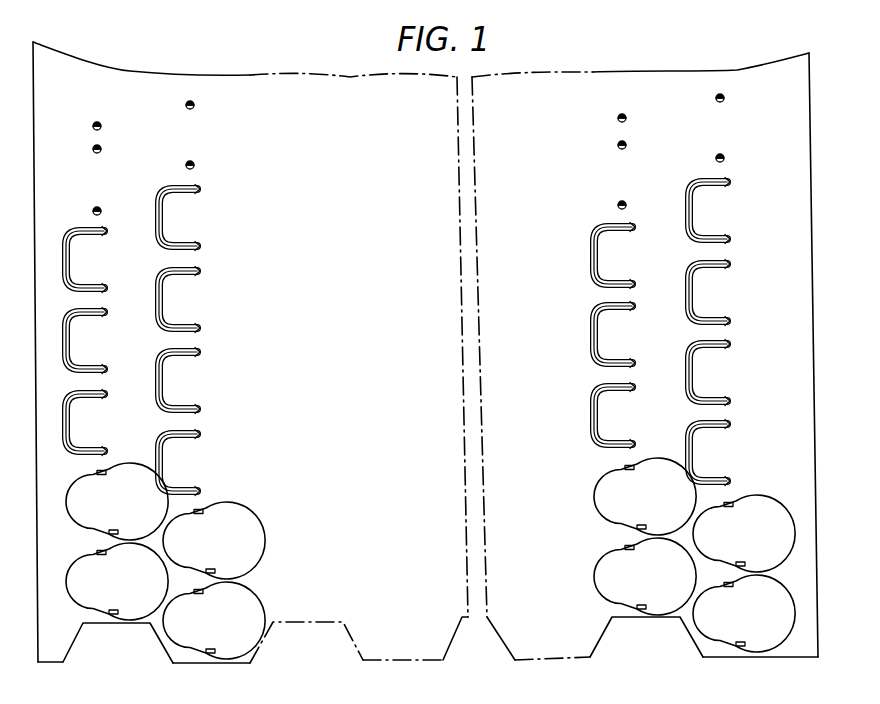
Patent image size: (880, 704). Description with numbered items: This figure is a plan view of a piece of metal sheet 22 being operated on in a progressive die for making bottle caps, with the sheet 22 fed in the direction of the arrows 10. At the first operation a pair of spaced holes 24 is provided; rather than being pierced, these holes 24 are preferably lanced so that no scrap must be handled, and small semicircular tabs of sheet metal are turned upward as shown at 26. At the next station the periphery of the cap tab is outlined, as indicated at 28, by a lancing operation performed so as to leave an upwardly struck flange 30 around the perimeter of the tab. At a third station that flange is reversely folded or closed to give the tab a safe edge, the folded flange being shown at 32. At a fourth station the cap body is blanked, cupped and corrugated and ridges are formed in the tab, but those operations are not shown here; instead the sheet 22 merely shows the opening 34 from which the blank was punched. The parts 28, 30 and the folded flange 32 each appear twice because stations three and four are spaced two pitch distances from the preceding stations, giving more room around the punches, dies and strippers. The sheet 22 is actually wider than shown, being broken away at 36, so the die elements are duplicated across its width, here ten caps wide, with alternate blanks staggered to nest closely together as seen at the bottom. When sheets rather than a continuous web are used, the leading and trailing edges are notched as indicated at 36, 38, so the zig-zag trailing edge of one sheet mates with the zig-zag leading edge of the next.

The feed direction arrows 10 is at (418, 382).
The metal sheet 22 is at (193, 52).
The spaced holes 24 is at (191, 109).
The semicircular tabs 26 is at (190, 102).
The tab periphery outline 28 is at (168, 195).
The upwardly struck flange 30 is at (188, 197).
The folded flange 32 is at (178, 360).
The opening 34 is at (228, 504).
The break-away line and notched edge 36 is at (103, 625).
The notched edge 38 is at (213, 664).